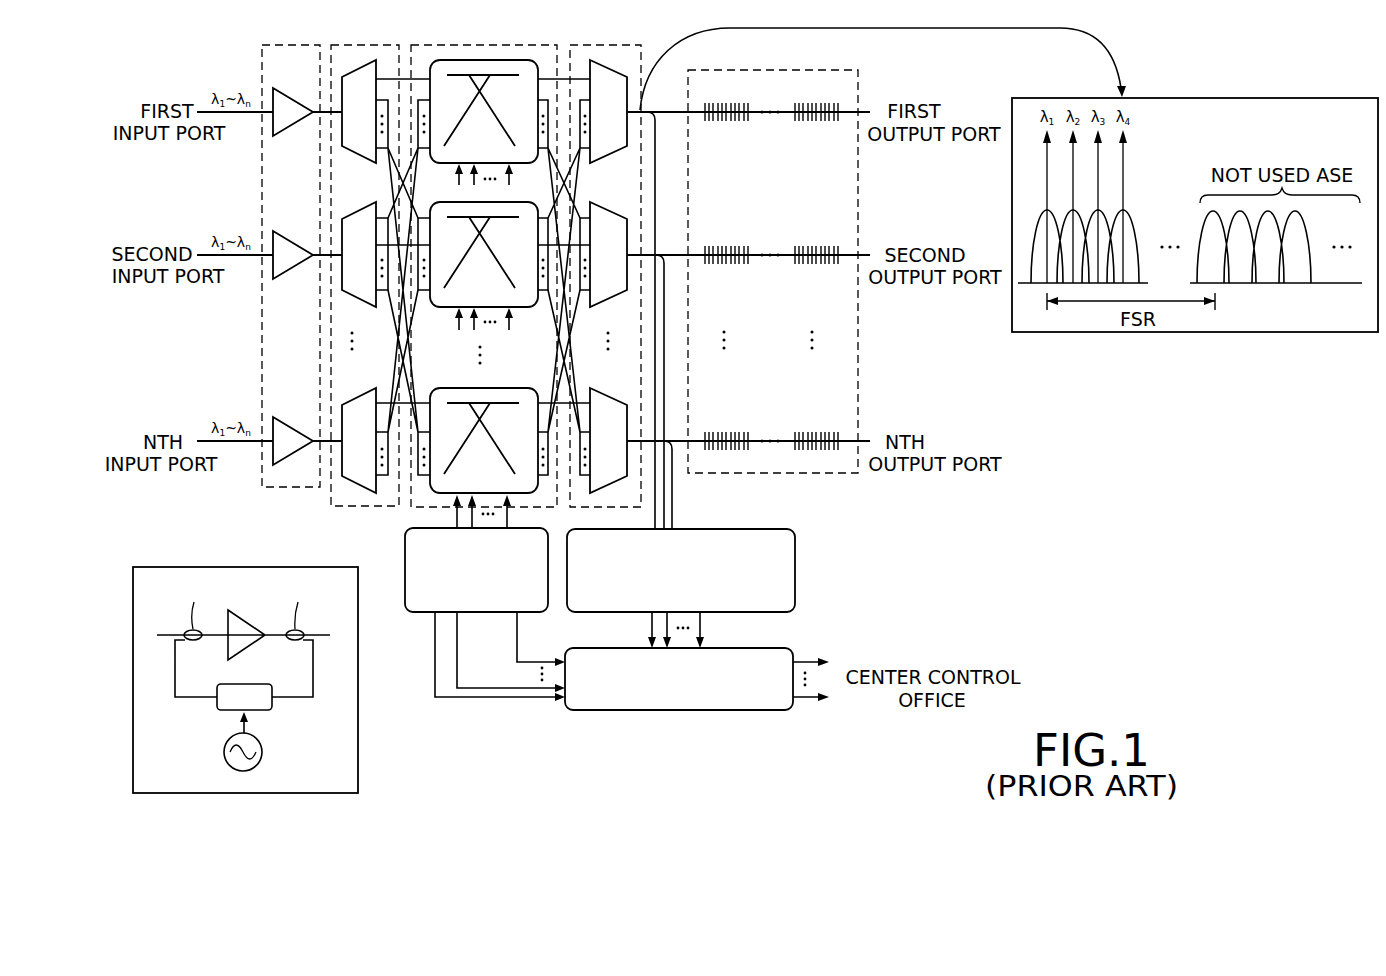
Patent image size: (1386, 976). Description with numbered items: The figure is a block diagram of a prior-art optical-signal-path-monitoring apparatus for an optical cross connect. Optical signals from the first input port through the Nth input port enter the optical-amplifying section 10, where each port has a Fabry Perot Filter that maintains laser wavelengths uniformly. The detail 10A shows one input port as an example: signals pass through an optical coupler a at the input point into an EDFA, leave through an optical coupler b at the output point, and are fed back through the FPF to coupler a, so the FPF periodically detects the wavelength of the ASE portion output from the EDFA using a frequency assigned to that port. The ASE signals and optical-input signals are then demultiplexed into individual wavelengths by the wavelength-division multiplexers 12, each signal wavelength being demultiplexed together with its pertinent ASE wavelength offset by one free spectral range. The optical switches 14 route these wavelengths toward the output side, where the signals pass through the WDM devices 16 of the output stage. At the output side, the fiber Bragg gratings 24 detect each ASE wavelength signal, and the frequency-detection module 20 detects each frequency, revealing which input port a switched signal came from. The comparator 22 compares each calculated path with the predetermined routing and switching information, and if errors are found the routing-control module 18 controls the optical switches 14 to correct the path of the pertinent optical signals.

The optical-amplifying section 10 is at (288, 45).
The wavelength-division multiplexers 12 is at (370, 45).
The optical switches 14 is at (487, 45).
The WDM multiplexer 16 is at (612, 45).
The routing-control module 18 is at (423, 612).
The frequency-detection module 20 is at (738, 529).
The comparator 22 is at (733, 710).
The fiber Bragg gratings 24 is at (777, 70).
The input port 10A is at (239, 567).